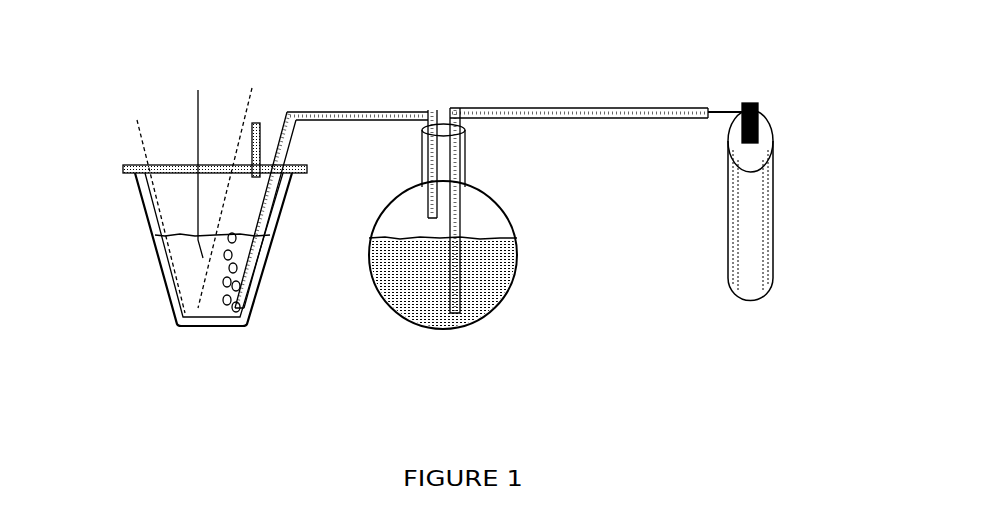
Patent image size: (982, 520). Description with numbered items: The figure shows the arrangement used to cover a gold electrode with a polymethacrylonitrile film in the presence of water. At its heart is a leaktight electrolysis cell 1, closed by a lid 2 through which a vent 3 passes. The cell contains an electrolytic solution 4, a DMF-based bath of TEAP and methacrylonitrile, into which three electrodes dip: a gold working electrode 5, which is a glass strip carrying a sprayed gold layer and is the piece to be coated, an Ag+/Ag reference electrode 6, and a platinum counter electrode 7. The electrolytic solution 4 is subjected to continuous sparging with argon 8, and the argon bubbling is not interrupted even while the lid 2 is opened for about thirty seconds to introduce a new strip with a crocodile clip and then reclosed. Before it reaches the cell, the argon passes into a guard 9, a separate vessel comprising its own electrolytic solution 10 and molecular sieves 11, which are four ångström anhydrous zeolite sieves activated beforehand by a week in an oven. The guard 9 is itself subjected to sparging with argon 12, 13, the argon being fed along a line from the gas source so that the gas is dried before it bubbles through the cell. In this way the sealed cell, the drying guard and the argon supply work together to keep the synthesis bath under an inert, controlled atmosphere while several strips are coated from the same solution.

The leaktight electrolysis cell 1 is at (160, 308).
The lid 2 is at (120, 177).
The vent 3 is at (260, 117).
The electrolytic solution 4 is at (202, 312).
The gold working electrode 5 is at (235, 97).
The Ag+/Ag reference electrode 6 is at (195, 98).
The platinum counter electrode 7 is at (138, 135).
The argon sparging 8 is at (410, 98).
The guard 9 is at (487, 328).
The electrolytic solution 10 is at (490, 242).
The molecular sieves 11 is at (500, 290).
The argon sparging 12 is at (565, 100).
The argon sparging 13 is at (775, 192).